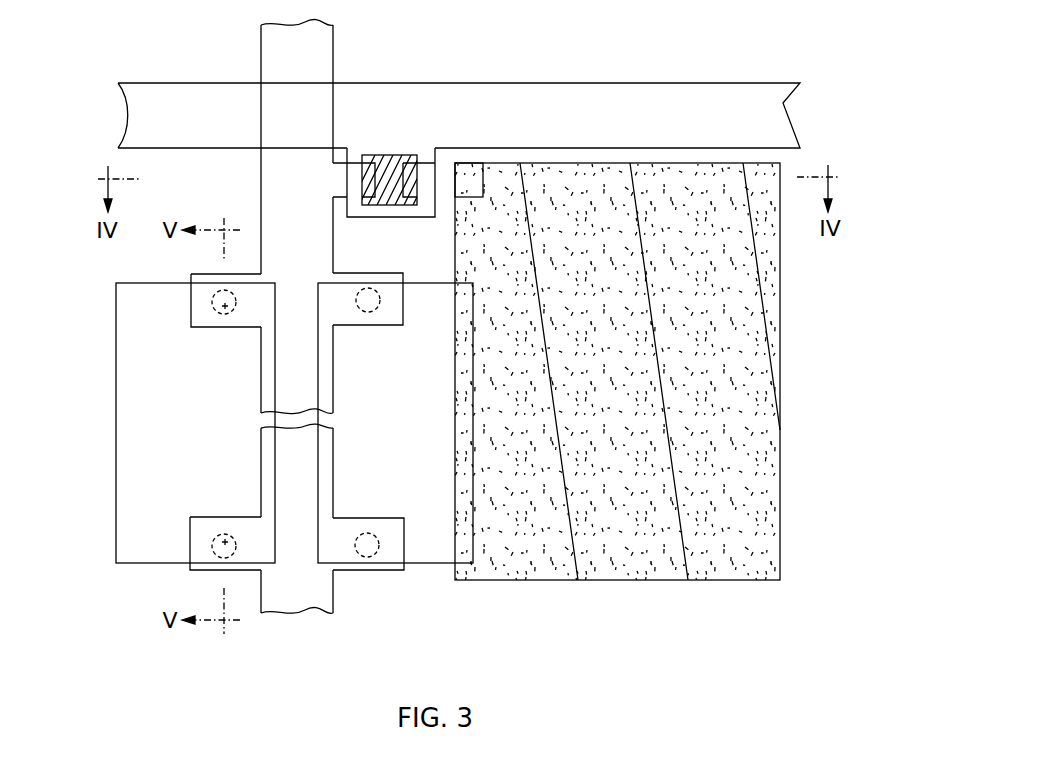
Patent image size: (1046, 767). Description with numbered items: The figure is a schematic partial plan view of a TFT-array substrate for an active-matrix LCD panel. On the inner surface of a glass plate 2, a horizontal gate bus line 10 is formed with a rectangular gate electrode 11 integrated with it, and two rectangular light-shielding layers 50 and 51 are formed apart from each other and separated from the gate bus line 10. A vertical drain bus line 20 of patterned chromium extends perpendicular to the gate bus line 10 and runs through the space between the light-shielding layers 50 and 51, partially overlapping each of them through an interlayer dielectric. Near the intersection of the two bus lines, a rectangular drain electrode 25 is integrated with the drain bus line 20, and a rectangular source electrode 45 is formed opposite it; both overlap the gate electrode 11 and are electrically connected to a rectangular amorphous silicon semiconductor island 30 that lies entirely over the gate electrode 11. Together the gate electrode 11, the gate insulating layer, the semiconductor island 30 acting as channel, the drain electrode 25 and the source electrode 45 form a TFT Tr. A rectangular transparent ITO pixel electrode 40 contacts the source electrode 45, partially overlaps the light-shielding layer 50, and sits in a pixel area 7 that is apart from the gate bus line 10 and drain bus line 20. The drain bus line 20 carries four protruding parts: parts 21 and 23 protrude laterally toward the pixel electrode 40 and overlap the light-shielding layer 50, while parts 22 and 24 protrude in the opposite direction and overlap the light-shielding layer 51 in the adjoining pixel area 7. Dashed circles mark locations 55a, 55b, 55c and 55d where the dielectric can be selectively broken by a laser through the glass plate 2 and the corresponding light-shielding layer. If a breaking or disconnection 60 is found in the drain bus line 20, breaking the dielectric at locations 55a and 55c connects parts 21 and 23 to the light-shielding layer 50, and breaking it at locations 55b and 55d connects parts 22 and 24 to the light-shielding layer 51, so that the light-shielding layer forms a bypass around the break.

The glass plate 2 is at (614, 614).
The pixel area 7 is at (170, 153).
The gate bus line 10 is at (633, 90).
The gate electrode 11 is at (435, 183).
The drain bus line 20 is at (268, 57).
The protruding part 21 is at (368, 276).
The protruding part 22 is at (190, 280).
The protruding part 23 is at (350, 568).
The protruding part 24 is at (198, 571).
The drain electrode 25 is at (355, 162).
The semiconductor island 30 is at (395, 205).
The pixel electrode 40 is at (772, 497).
The source electrode 45 is at (427, 163).
The light-shielding layer 50 is at (433, 555).
The light-shielding layer 51 is at (127, 527).
The location 55a is at (366, 312).
The location 55b is at (226, 312).
The location 55c is at (365, 533).
The location 55d is at (226, 534).
The breaking or disconnection 60 is at (324, 425).
The TFT Tr is at (390, 135).